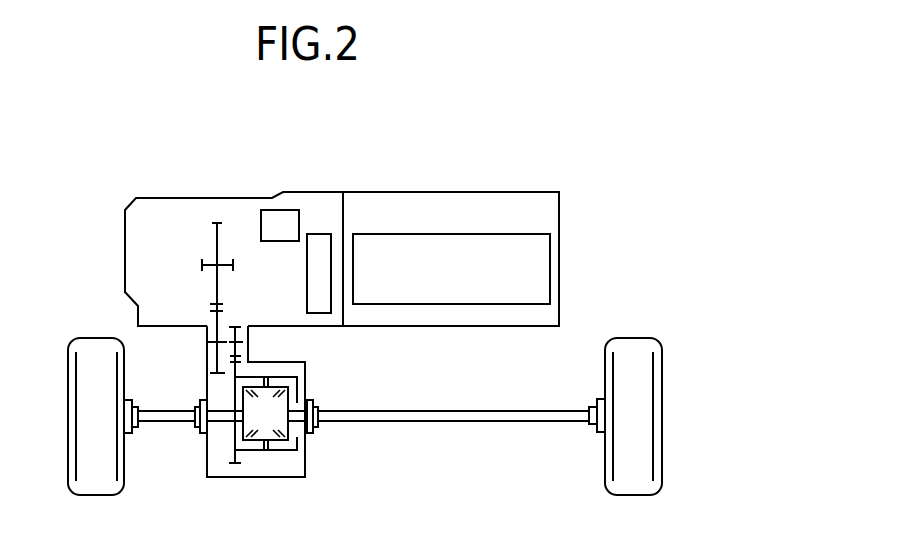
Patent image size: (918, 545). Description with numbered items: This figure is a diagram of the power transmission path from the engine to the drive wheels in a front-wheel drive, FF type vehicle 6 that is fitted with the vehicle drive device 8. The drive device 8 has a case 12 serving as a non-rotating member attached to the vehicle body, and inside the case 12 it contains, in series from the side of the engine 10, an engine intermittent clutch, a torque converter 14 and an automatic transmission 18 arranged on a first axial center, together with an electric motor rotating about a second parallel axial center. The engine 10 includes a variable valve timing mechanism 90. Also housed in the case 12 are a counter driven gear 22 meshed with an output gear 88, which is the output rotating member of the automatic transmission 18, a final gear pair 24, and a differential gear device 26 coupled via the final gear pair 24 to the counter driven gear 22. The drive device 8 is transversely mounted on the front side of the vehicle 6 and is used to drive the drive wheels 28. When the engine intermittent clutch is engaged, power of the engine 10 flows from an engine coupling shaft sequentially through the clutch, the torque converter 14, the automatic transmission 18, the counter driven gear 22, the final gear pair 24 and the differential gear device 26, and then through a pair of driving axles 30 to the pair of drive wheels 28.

The vehicle 6 is at (688, 108).
The vehicle drive device 8 is at (559, 172).
The engine 10 is at (380, 313).
The case 12 is at (247, 197).
The torque converter 14 is at (318, 308).
The automatic transmission 18 is at (138, 210).
The counter driven gear 22 is at (207, 357).
The final gear pair 24 is at (255, 358).
The differential gear device 26 is at (288, 470).
The drive wheels 28 is at (97, 345).
The driving axles 30 is at (155, 417).
The output gear 88 is at (217, 222).
The variable valve timing mechanism 90 is at (550, 266).